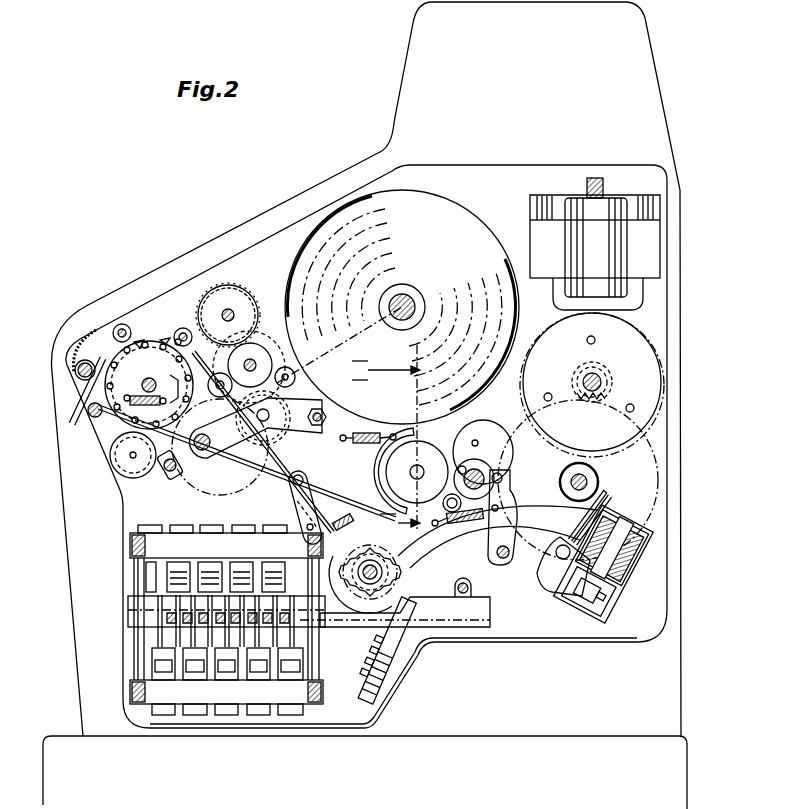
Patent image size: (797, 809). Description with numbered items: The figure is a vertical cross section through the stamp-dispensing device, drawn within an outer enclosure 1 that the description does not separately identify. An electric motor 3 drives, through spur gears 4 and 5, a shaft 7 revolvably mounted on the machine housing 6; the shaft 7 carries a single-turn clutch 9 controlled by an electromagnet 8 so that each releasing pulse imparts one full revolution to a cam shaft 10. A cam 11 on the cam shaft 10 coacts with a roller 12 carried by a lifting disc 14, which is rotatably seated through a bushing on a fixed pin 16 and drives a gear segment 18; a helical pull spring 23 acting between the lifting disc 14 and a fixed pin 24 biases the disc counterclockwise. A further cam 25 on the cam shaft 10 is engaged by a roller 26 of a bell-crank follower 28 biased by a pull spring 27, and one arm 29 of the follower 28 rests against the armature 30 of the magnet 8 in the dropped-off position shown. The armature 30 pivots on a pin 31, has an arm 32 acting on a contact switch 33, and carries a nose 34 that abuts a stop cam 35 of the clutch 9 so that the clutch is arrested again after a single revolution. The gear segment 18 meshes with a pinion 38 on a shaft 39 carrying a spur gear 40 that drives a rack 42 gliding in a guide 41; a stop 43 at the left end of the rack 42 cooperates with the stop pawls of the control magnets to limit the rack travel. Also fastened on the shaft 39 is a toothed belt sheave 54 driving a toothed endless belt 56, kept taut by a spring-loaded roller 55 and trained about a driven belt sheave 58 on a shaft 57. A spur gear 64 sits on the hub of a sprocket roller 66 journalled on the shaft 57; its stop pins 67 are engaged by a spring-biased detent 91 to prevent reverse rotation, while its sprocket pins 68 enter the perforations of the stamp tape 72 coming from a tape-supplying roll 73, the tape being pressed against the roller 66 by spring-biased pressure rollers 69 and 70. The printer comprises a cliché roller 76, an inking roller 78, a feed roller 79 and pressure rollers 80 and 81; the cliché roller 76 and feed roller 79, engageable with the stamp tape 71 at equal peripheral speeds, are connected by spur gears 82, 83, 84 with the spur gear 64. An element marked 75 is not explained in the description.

The housing 1 is at (426, 58).
The electric motor 3 is at (643, 357).
The spur gear 4 is at (613, 380).
The spur gear 5 is at (643, 463).
The machine housing 6 is at (653, 307).
The shaft 7 is at (584, 477).
The electromagnet 8 is at (645, 553).
The single-turn clutch 9 is at (600, 480).
The cam shaft 10 is at (462, 438).
The cam 11 is at (362, 420).
The roller 12 is at (423, 510).
The lifting disc 14 is at (386, 474).
The pin 16 is at (394, 488).
The gear segment 18 is at (466, 594).
The helical pull spring 23 is at (362, 444).
The fixed pin 24 is at (343, 441).
The cam 25 is at (480, 473).
The roller 26 is at (503, 475).
The pull spring 27 is at (452, 521).
The follower 28 is at (487, 543).
The arm 29 is at (553, 511).
The armature 30 is at (640, 519).
The pin 31 is at (558, 557).
The arm 32 is at (573, 573).
The contact switch 33 is at (600, 628).
The nose 34 is at (612, 498).
The stop cam 35 is at (608, 492).
The pinion 38 is at (380, 572).
The shaft 39 is at (397, 572).
The spur gear 40 is at (350, 603).
The guide 41 is at (480, 617).
The rack 42 is at (397, 603).
The stop 43 is at (147, 607).
The toothed belt sheave 54 is at (310, 547).
The spring-loaded roller 55 is at (297, 517).
The toothed endless drive belt 56 is at (263, 485).
The shaft 57 is at (148, 378).
The driven belt sheave 58 is at (158, 341).
The spur gear 64 is at (117, 472).
The sprocket roller 66 is at (110, 415).
The stop pins 67 is at (140, 338).
The sprocket pins 68 is at (166, 340).
The pressure roller 69 is at (119, 324).
The pressure roller 70 is at (187, 329).
The stamp tape 71 is at (105, 357).
The stamp tape 72 is at (372, 205).
The tape-supplying roll 73 is at (415, 297).
The belt 75 is at (262, 322).
The cliché roller 76 is at (256, 344).
The inking roller 78 is at (230, 297).
The feed roller 79 is at (258, 437).
The pressure roller 80 is at (213, 377).
The pressure roller 81 is at (293, 370).
The spur gear 82 is at (280, 357).
The spur gear 83 is at (250, 441).
The spur gear 84 is at (220, 494).
The spring-biased detent 91 is at (180, 339).